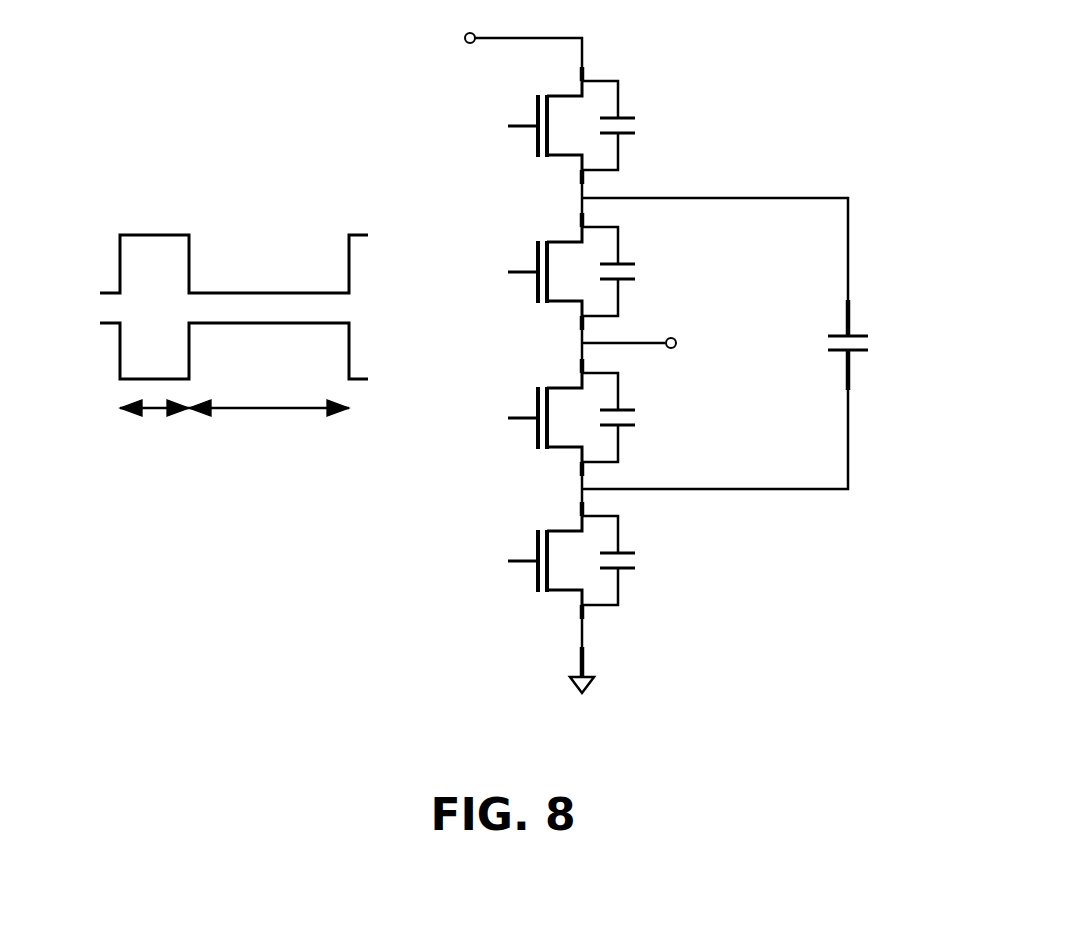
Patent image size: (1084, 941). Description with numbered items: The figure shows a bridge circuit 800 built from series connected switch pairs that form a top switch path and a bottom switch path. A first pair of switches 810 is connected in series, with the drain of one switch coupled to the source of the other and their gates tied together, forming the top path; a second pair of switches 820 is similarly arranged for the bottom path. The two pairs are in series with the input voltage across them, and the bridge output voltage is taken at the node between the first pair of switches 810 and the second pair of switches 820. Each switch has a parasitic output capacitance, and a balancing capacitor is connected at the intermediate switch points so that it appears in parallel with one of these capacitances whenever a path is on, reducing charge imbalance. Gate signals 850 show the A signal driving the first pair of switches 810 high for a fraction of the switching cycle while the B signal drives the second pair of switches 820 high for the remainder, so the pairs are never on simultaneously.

The bridge circuit 800 is at (654, 353).
The first pair of switches 810 is at (440, 100).
The second pair of switches 820 is at (440, 397).
The gate signals 850 is at (234, 293).